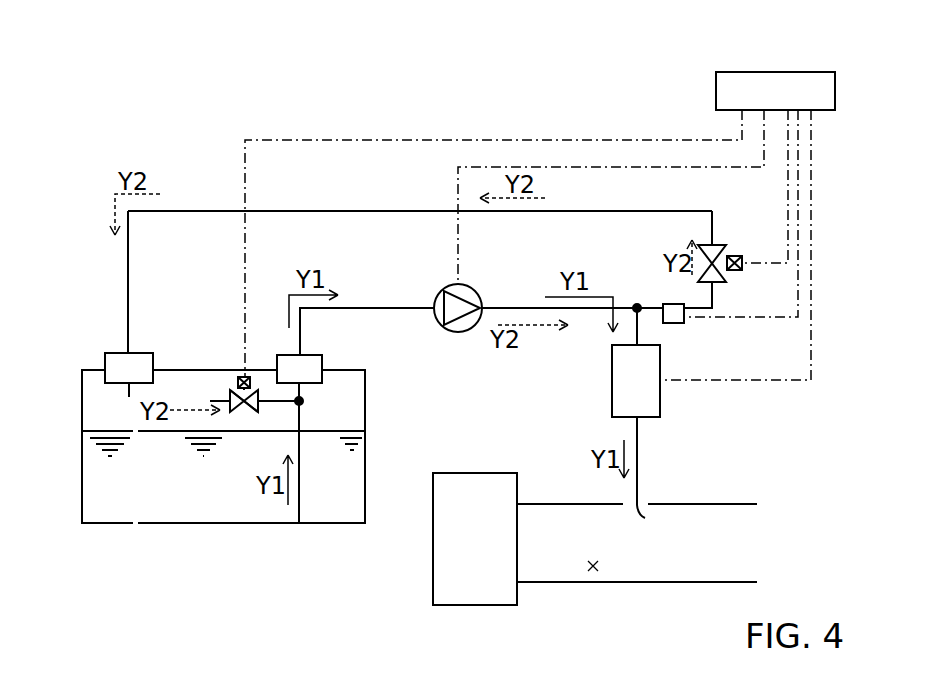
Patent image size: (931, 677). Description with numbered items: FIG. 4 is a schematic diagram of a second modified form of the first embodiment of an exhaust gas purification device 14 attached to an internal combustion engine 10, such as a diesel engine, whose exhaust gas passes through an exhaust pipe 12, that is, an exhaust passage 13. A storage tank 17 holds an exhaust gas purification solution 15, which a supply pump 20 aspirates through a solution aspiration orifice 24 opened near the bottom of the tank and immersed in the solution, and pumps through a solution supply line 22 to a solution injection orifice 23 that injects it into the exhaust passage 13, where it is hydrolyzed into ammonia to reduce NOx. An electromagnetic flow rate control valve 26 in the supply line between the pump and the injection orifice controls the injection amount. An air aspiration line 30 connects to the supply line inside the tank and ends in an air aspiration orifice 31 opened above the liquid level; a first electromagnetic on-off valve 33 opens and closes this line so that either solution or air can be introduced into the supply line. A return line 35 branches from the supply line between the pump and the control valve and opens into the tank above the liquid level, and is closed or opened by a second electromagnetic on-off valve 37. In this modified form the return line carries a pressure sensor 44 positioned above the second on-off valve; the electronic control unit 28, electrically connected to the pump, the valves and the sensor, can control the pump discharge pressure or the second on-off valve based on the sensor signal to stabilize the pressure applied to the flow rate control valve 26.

The internal combustion engine 10 is at (472, 487).
The exhaust pipe 12 is at (696, 503).
The exhaust passage 13 is at (593, 575).
The exhaust gas purification device 14 is at (210, 175).
The exhaust gas purification solution 15 is at (186, 497).
The storage tank 17 is at (82, 384).
The supply pump 20 is at (478, 292).
The solution supply line 22 is at (392, 306).
The solution injection orifice 23 is at (645, 518).
The solution aspiration orifice 24 is at (298, 523).
The flow rate control valve 26 is at (612, 372).
The electronic control unit 28 is at (803, 72).
The air aspiration line 30 is at (233, 392).
The air aspiration orifice 31 is at (212, 401).
The first electromagnetic on-off valve 33 is at (252, 378).
The return line 35 is at (128, 260).
The second electromagnetic on-off valve 37 is at (729, 246).
The pressure sensor 44 is at (677, 323).